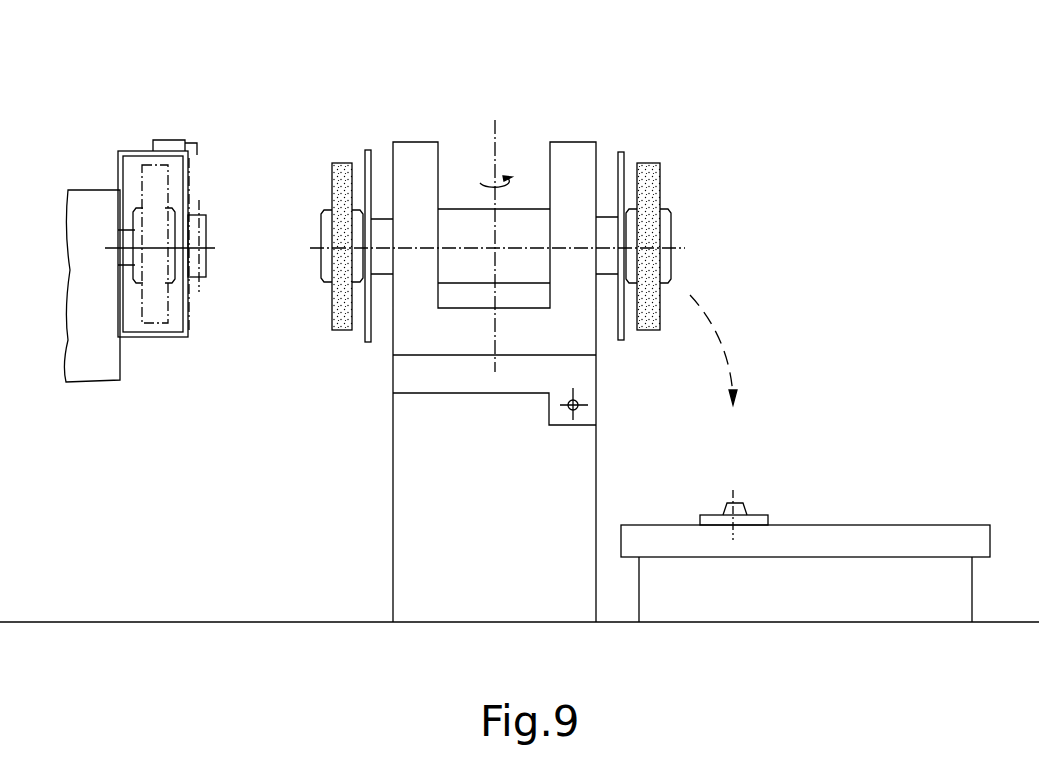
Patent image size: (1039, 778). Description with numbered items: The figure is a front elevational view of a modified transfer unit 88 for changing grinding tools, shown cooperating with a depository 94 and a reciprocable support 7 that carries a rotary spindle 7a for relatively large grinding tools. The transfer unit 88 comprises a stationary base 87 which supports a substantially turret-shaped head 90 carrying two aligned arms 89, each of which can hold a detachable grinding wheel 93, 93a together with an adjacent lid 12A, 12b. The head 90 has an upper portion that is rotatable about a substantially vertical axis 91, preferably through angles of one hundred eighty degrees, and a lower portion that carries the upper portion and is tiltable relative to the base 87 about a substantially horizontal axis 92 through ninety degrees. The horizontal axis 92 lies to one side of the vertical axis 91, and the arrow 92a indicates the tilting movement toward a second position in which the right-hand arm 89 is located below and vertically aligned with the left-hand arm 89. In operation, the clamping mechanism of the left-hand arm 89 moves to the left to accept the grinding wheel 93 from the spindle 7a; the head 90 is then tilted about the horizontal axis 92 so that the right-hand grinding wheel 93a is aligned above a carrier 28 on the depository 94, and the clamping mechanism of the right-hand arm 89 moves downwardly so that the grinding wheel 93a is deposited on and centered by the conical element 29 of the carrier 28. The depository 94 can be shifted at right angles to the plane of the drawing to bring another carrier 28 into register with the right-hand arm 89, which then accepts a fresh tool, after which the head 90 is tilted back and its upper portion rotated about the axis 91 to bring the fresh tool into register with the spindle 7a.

The reciprocable support 7 is at (94, 358).
The rotary spindle 7a is at (125, 240).
The lid 12A is at (368, 337).
The lid 12b is at (624, 338).
The carrier 28 is at (773, 520).
The conical element 29 is at (742, 505).
The stationary base 87 is at (415, 527).
The transfer unit 88 is at (645, 109).
The arm 89 is at (477, 262).
The turret-shaped head 90 is at (415, 160).
The vertical axis 91 is at (497, 122).
The horizontal axis 92 is at (585, 407).
The arrow 92a is at (715, 325).
The grinding wheel 93 is at (345, 183).
The grinding wheel 93a is at (650, 178).
The depository 94 is at (918, 540).